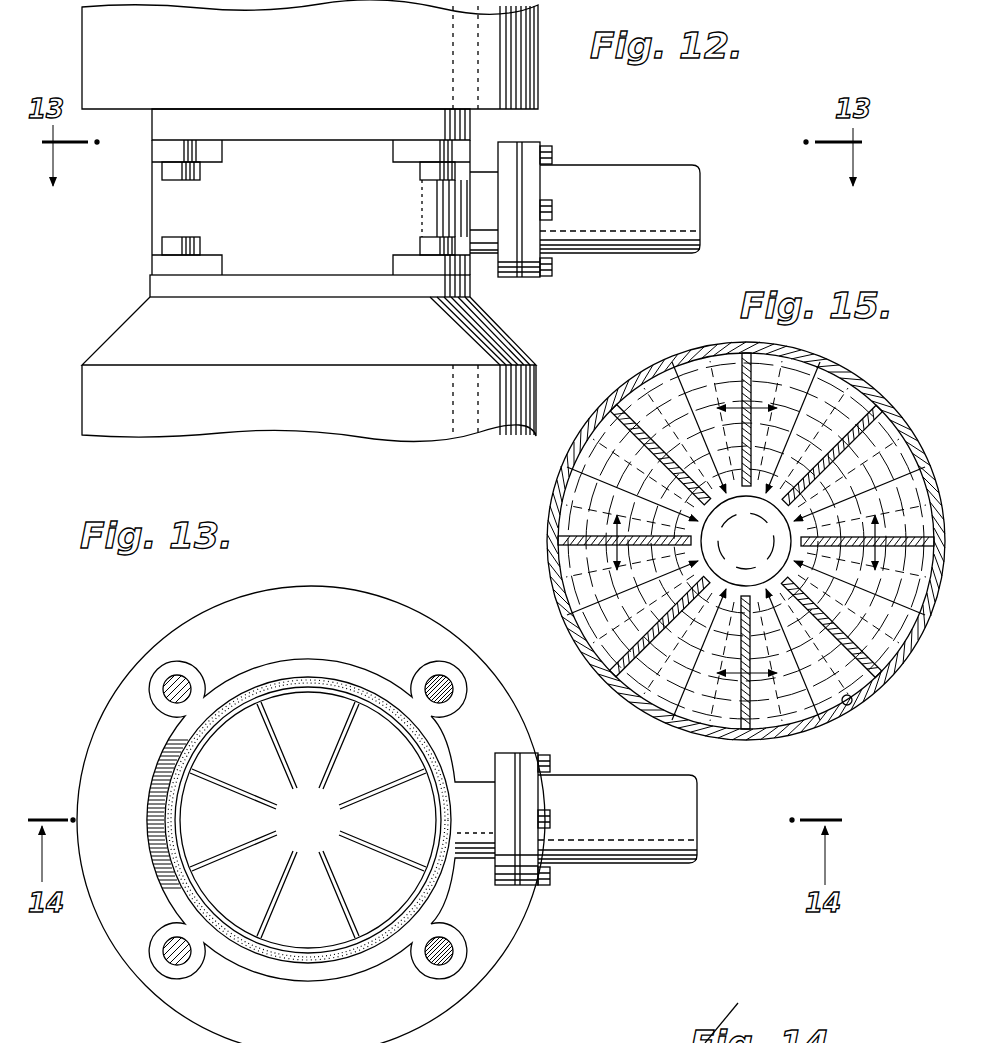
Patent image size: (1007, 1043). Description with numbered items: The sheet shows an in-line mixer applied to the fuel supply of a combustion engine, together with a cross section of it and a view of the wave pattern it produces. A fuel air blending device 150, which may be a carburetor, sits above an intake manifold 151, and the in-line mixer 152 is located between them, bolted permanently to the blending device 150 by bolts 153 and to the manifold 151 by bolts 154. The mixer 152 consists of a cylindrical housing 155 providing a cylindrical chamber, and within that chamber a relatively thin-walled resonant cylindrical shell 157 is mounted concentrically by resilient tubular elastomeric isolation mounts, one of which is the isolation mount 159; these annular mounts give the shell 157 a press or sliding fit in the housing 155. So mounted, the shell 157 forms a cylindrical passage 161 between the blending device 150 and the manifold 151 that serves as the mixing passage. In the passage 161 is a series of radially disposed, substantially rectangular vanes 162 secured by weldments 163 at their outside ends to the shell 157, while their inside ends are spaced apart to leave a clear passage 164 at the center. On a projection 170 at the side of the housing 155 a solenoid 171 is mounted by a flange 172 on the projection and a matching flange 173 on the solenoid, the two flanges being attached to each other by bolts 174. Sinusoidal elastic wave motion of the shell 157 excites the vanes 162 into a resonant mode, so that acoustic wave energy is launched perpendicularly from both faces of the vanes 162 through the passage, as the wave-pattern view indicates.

In FIG. 12, the fuel air blending device 150 is at (310, 54).
In FIG. 12, the intake manifold 151 is at (332, 437).
In FIG. 13, the intake manifold 151 is at (116, 672).
In FIG. 12, the in-line mixer 152 is at (146, 206).
In FIG. 13, the in-line mixer 152 is at (150, 740).
In FIG. 12, the bolts 153 is at (200, 170).
In FIG. 13, the bolts 153 is at (436, 965).
In FIG. 12, the bolts 154 is at (200, 246).
In FIG. 12, the cylindrical housing 155 is at (153, 245).
In FIG. 13, the cylindrical housing 155 is at (337, 672).
In FIG. 13, the resonant cylindrical shell 157 is at (290, 690).
In FIG. 15, the resonant cylindrical shell 157 is at (797, 737).
In FIG. 13, the isolation mount 159 is at (356, 672).
In FIG. 13, the cylindrical passage 161 is at (212, 882).
In FIG. 15, the cylindrical passage 161 is at (852, 703).
In FIG. 13, the vanes 162 is at (339, 912).
In FIG. 15, the vanes 162 is at (560, 516).
In FIG. 13, the weldments 163 is at (420, 862).
In FIG. 15, the weldments 163 is at (628, 404).
In FIG. 13, the clear passage 164 is at (316, 820).
In FIG. 15, the clear passage 164 is at (746, 541).
In FIG. 12, the projection 170 is at (483, 253).
In FIG. 13, the projection 170 is at (475, 790).
In FIG. 12, the solenoid 171 is at (702, 196).
In FIG. 13, the solenoid 171 is at (678, 865).
In FIG. 12, the flange 172 is at (512, 142).
In FIG. 13, the flange 172 is at (513, 885).
In FIG. 12, the flange 173 is at (540, 144).
In FIG. 13, the flange 173 is at (525, 863).
In FIG. 12, the bolts 174 is at (552, 264).
In FIG. 13, the bolts 174 is at (552, 764).